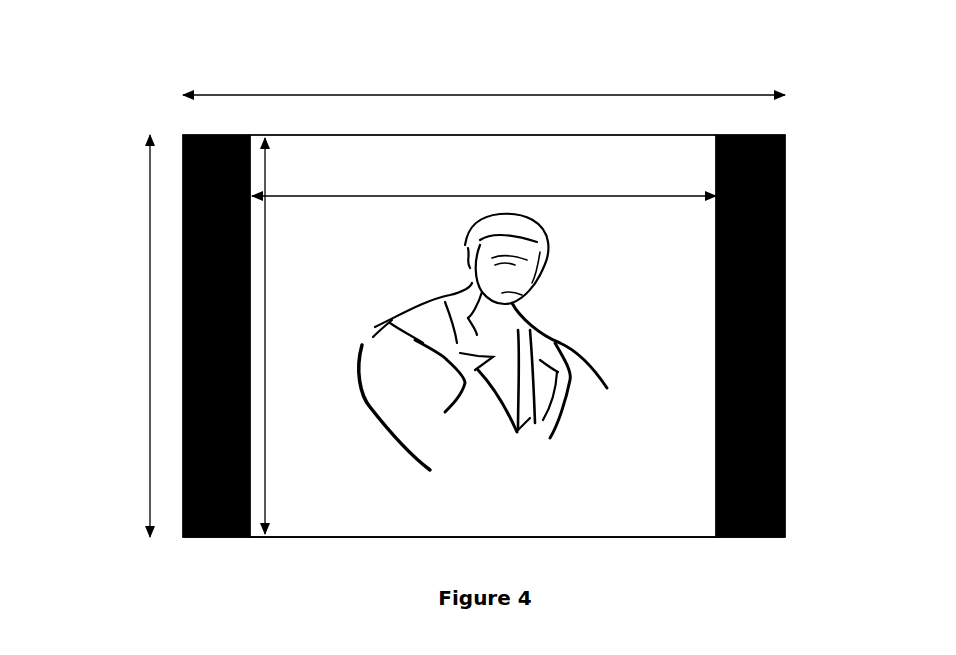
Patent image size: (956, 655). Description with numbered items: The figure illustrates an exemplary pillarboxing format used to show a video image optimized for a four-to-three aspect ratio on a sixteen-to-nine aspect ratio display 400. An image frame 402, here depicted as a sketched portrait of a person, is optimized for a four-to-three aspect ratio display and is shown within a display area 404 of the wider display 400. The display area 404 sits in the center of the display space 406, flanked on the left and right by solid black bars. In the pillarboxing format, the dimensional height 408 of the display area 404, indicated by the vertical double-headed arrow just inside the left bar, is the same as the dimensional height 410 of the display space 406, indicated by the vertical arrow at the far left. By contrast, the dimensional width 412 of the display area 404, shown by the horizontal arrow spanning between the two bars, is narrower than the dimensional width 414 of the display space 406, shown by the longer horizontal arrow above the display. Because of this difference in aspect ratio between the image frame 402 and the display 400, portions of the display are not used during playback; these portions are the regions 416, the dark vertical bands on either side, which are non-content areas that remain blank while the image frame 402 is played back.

The display 400 is at (484, 355).
The image frame 402 is at (523, 302).
The display area 404 is at (663, 508).
The display space 406 is at (305, 537).
The dimensional height of the display area 408 is at (268, 386).
The dimensional height of the display space 410 is at (150, 330).
The dimensional width of the display area 412 is at (600, 195).
The dimensional width of the display space 414 is at (423, 95).
The regions 416 is at (785, 363).